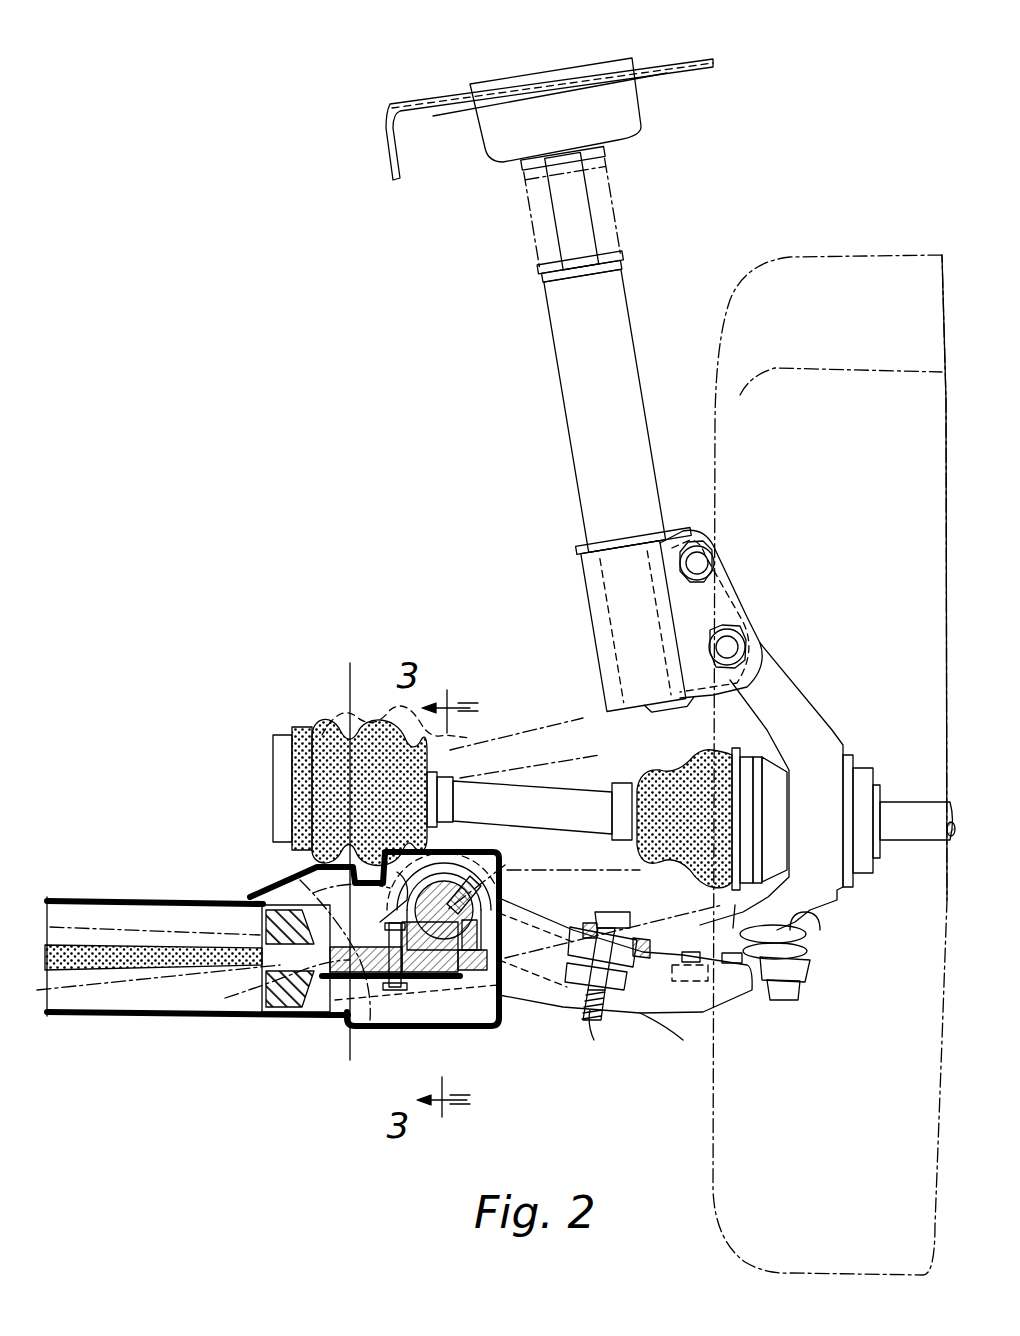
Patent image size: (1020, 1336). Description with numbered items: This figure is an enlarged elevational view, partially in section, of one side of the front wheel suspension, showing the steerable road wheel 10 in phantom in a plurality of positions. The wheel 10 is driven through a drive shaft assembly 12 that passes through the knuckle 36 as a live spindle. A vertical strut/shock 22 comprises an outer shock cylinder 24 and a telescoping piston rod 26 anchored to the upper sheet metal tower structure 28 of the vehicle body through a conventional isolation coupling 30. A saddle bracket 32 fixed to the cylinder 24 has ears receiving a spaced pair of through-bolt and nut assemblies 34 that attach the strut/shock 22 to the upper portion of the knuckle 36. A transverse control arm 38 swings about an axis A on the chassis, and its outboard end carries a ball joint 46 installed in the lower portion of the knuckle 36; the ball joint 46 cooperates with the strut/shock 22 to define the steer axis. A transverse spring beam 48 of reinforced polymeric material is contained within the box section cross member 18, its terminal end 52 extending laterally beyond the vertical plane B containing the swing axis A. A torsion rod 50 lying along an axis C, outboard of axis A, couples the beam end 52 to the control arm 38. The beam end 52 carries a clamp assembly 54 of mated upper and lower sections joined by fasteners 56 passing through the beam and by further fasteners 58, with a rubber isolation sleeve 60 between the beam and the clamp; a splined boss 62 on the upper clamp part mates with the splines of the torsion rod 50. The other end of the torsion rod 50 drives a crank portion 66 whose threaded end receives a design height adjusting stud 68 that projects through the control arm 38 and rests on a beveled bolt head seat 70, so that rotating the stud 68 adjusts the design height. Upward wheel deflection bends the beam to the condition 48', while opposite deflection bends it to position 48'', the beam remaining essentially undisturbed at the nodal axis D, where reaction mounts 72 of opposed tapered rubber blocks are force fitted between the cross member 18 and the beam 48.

The steerable front road wheel 10 is at (860, 378).
The drive shaft assembly 12 is at (916, 832).
The box section cross member 18 is at (120, 897).
The vertical strut/shock 22 is at (562, 452).
The outer shock cylinder 24 is at (617, 312).
The telescoping piston rod 26 is at (583, 222).
The upper sheet metal tower structure 28 is at (682, 62).
The isolation coupling 30 is at (492, 132).
The saddle bracket 32 is at (617, 610).
The through-bolt and nut assemblies 34 is at (728, 647).
The knuckle 36 is at (815, 736).
The transverse control arm 38 is at (690, 1020).
The ball joint 46 is at (800, 948).
The transverse spring beam 48 is at (153, 909).
The spring beam bent position 48' is at (158, 1011).
The spring beam opposite deflection position 48'' is at (155, 888).
The torsion rod 50 is at (415, 990).
The terminal beam end 52 is at (425, 985).
The clamp assembly 54 is at (478, 900).
The fasteners 56 is at (394, 995).
The further fasteners 58 is at (482, 935).
The isolation sleeve 60 is at (340, 982).
The boss 62 is at (446, 895).
The crank portion 66 is at (585, 968).
The design height adjusting stud 68 is at (593, 1025).
The beveled bolt head seat 70 is at (642, 952).
The reaction mounts 72 is at (275, 930).
The swing axis A is at (335, 905).
The vertical plane B is at (345, 690).
The torsion rod axis C is at (488, 876).
The nodal axis D is at (273, 985).